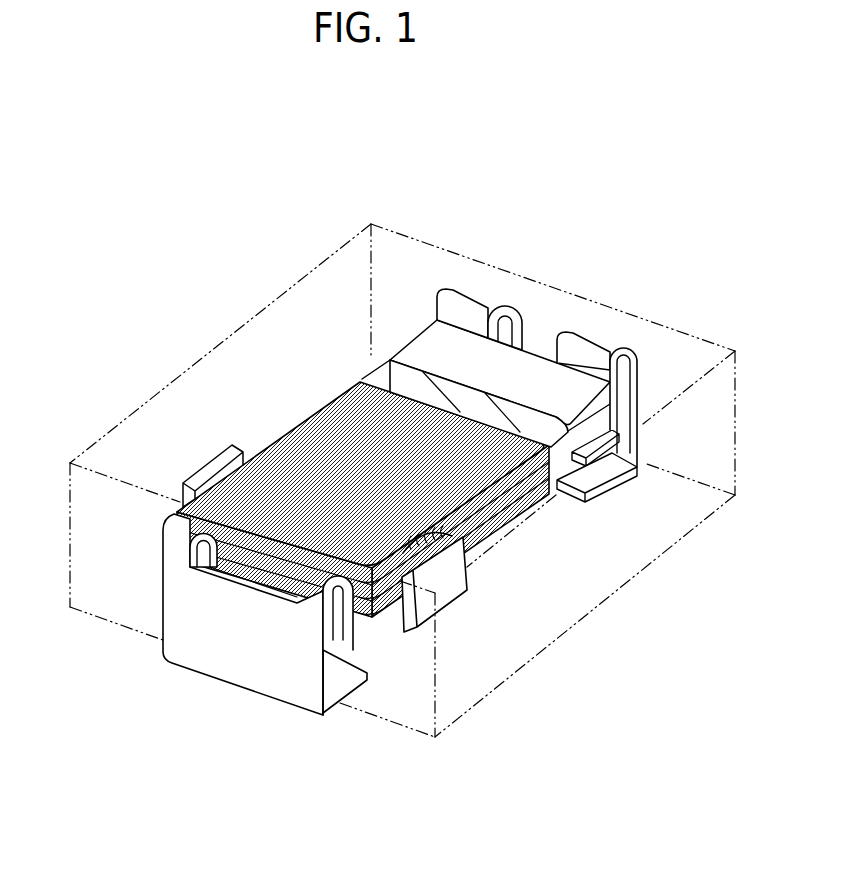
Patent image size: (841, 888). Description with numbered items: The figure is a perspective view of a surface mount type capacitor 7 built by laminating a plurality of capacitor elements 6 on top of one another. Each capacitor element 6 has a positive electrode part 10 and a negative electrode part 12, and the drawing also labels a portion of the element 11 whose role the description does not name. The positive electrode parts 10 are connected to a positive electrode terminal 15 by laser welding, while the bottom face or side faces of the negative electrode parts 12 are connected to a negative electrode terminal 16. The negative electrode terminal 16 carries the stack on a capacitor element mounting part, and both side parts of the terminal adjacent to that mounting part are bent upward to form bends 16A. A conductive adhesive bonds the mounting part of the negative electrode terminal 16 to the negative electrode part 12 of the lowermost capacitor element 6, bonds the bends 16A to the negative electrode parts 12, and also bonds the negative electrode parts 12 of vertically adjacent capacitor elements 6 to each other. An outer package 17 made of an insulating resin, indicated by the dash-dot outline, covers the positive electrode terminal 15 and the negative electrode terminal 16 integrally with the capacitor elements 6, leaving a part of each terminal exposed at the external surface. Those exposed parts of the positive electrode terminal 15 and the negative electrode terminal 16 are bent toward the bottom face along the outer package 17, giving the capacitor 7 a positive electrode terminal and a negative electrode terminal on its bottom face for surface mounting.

The capacitor 7 is at (688, 210).
The capacitor element 6 is at (297, 417).
The positive electrode part 10 is at (432, 345).
The lead terminal 11 is at (390, 372).
The negative electrode part 12 is at (267, 480).
The positive electrode terminal 15 is at (593, 340).
The negative electrode terminal 16 is at (217, 648).
The bend 16A is at (423, 610).
The outer package 17 is at (697, 367).